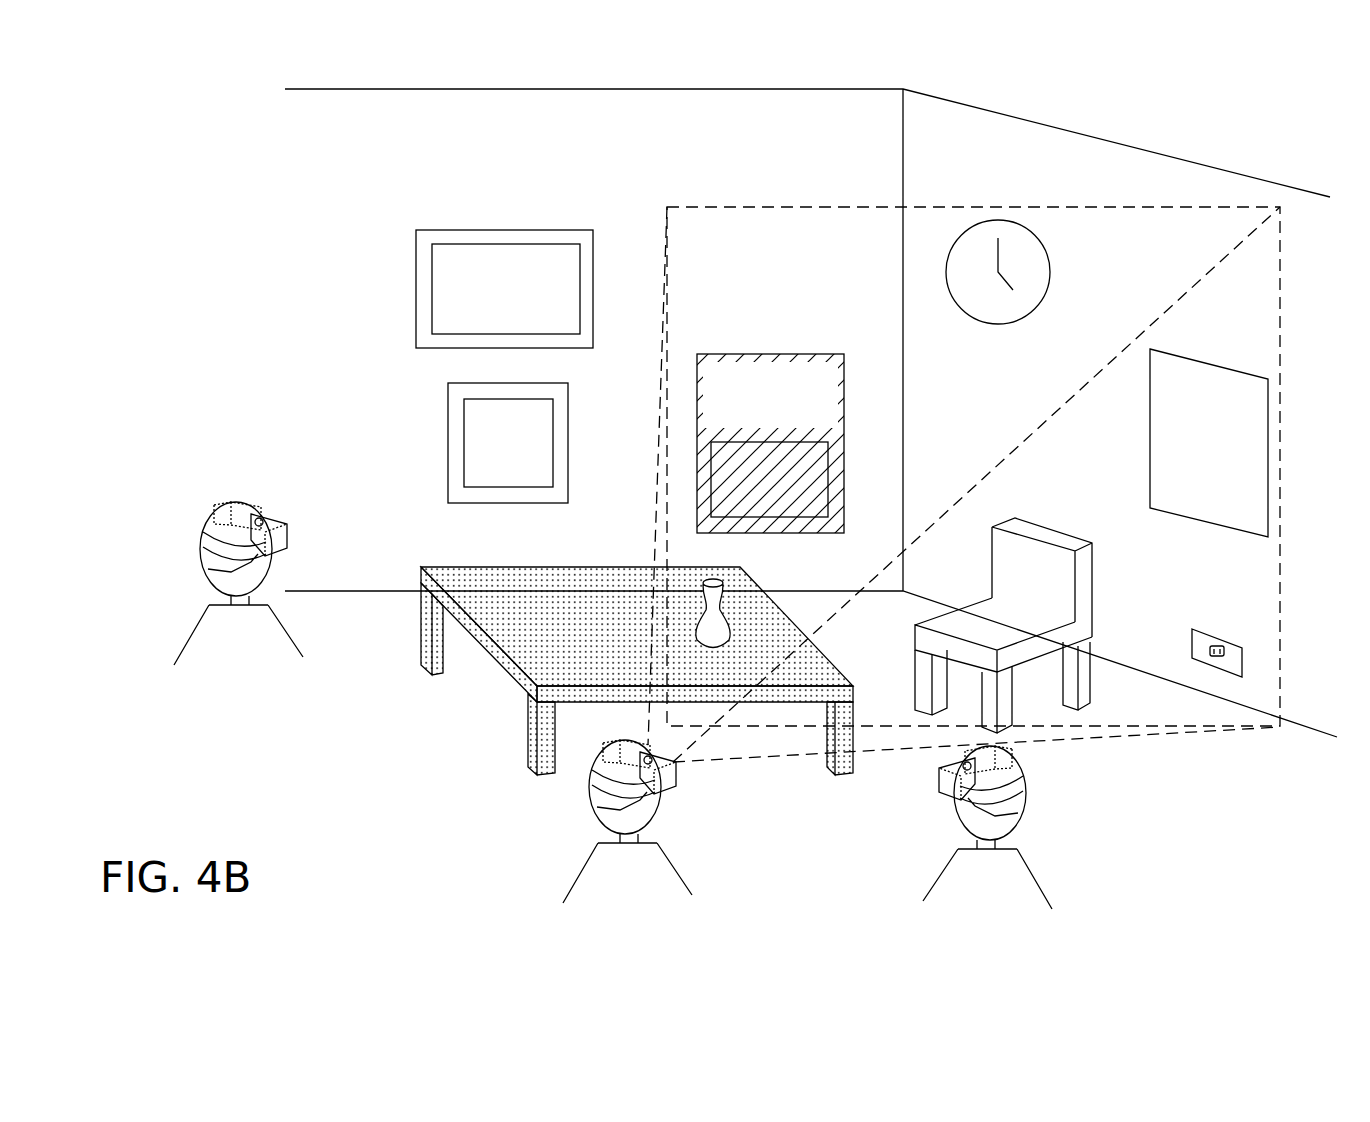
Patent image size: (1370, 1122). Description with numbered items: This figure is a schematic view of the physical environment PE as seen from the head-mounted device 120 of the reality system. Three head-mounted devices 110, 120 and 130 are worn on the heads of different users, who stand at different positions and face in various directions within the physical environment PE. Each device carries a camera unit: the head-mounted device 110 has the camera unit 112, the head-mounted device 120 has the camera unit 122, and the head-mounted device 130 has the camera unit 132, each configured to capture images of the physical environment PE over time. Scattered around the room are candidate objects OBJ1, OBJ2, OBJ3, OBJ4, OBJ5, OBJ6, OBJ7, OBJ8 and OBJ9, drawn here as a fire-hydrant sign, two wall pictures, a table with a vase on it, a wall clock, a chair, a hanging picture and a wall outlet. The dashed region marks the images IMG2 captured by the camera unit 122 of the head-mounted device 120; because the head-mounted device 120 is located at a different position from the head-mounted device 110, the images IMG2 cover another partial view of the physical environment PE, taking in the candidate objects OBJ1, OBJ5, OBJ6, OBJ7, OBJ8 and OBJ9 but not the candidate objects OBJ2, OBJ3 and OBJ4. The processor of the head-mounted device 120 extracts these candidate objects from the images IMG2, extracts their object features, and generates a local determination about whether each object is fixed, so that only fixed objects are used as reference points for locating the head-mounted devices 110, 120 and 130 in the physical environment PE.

The physical environment PE is at (340, 134).
The images IMG2 is at (840, 207).
The candidate object OBJ1 is at (790, 354).
The candidate object OBJ2 is at (448, 439).
The candidate object OBJ3 is at (517, 230).
The candidate object OBJ4 is at (497, 668).
The candidate object OBJ5 is at (702, 595).
The candidate object OBJ6 is at (1047, 252).
The candidate object OBJ7 is at (1047, 527).
The candidate object OBJ8 is at (1195, 355).
The candidate object OBJ9 is at (1210, 630).
The head-mounted device 110 is at (952, 797).
The camera unit 112 is at (1013, 770).
The head-mounted device 120 is at (678, 773).
The camera unit 122 is at (593, 787).
The head-mounted device 130 is at (273, 517).
The camera unit 132 is at (240, 503).